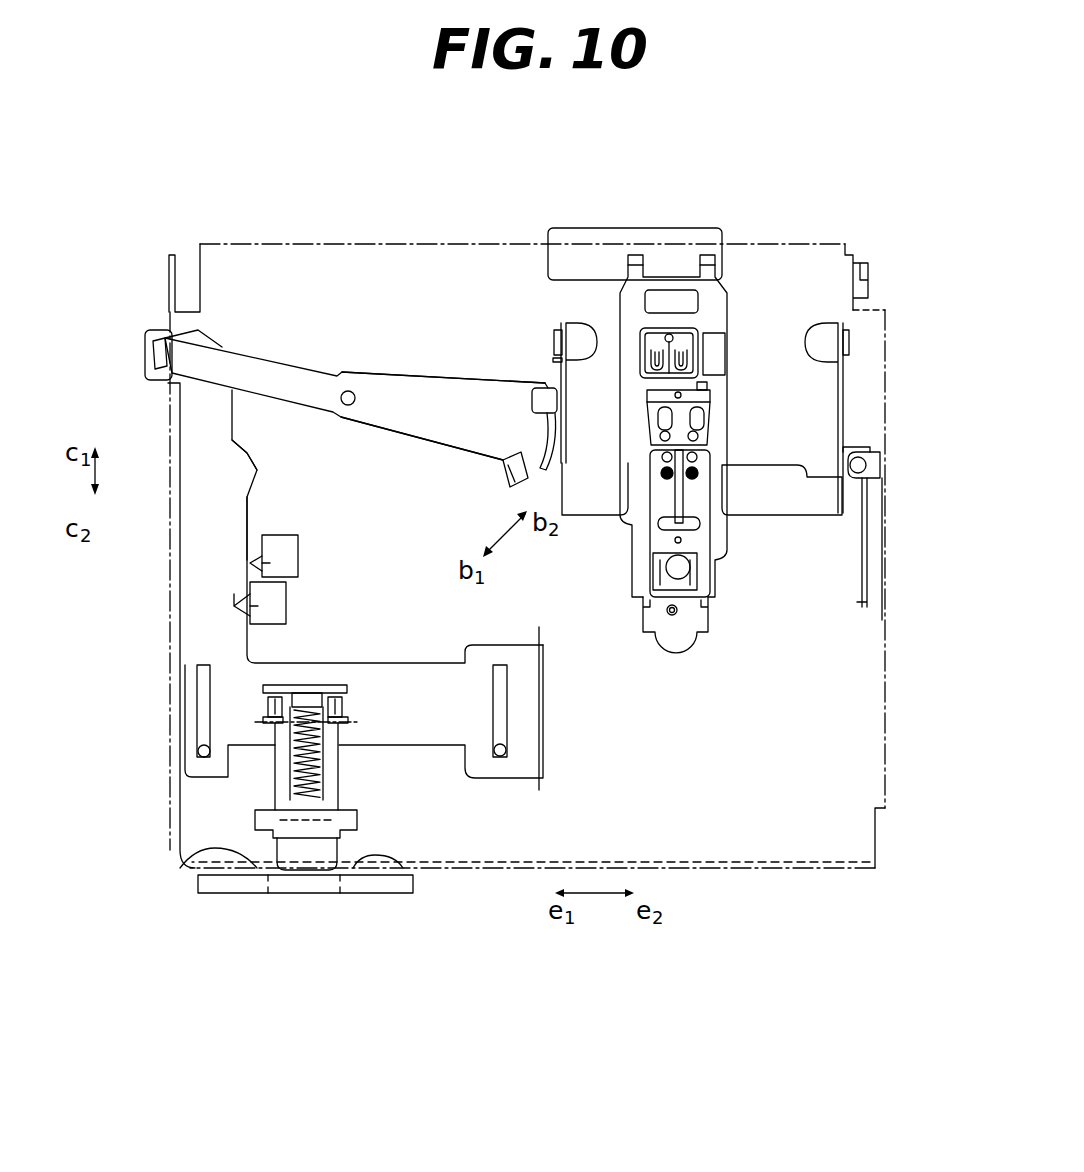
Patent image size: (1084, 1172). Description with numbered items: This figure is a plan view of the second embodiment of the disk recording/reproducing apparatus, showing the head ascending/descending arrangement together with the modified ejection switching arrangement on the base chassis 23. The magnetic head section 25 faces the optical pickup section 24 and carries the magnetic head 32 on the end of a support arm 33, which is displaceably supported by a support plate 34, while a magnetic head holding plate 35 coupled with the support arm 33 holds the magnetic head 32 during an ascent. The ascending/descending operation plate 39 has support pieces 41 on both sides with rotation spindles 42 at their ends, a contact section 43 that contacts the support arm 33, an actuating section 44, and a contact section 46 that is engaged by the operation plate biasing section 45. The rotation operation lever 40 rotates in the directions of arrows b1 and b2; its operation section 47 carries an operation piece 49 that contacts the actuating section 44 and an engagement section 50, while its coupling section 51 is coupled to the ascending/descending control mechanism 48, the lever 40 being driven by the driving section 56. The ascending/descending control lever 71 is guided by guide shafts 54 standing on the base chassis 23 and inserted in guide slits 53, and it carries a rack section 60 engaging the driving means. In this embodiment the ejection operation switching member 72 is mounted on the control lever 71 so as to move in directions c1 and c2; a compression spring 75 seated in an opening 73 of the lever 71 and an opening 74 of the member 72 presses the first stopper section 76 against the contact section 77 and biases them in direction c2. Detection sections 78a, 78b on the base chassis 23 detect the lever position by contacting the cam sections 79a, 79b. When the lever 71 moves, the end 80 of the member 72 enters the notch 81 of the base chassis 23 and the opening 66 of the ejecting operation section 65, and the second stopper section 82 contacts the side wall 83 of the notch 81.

The base chassis 23 is at (865, 348).
The optical pickup section 24 is at (762, 422).
The magnetic head section 25 is at (633, 307).
The magnetic head 32 is at (690, 581).
The support arm 33 is at (690, 495).
The support plate 34 is at (580, 232).
The magnetic head holding plate 35 is at (694, 613).
The ascending/descending operation plate 39 is at (808, 507).
The rotation operation lever 40 is at (288, 380).
The support pieces 41 is at (556, 360).
The rotation spindles 42 is at (551, 343).
The contact section 43 is at (595, 497).
The actuating section 44 is at (540, 381).
The ascending/descending operation plate biasing section 45 is at (878, 465).
The contact section 46 is at (862, 449).
The operation section 47 is at (432, 398).
The ascending/descending control mechanism 48 is at (128, 343).
The operation piece 49 is at (538, 426).
The engagement section 50 is at (504, 464).
The coupling section 51 is at (162, 345).
The guide slits 53 is at (204, 733).
The guide shafts 54 is at (202, 755).
The driving section 56 is at (158, 376).
The rack section 60 is at (542, 674).
The ejecting operation section 65 is at (212, 895).
The opening 66 is at (352, 884).
The ascending/descending control lever 71 is at (180, 592).
The ejection operation switching member 72 is at (307, 693).
The opening 73 is at (270, 790).
The opening 74 is at (330, 779).
The compression spring 75 is at (324, 777).
The first stopper section 76 is at (268, 688).
The contact section 77 is at (268, 709).
The detection section 78a is at (260, 609).
The detection section 78b is at (277, 549).
The cam section 79a is at (242, 526).
The cam section 79b is at (258, 471).
The end 80 is at (308, 850).
The notch 81 is at (287, 880).
The second stopper section 82 is at (268, 835).
The side wall 83 is at (207, 848).